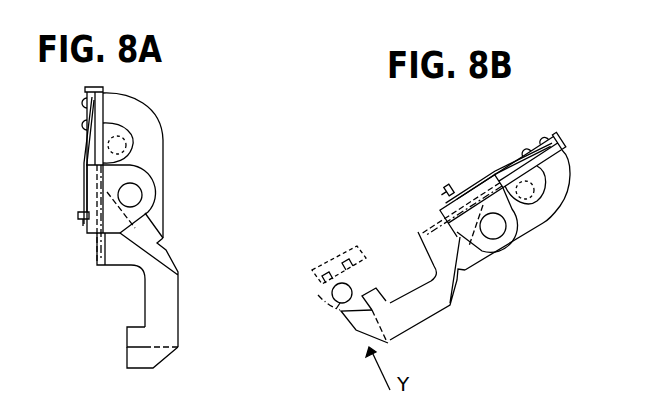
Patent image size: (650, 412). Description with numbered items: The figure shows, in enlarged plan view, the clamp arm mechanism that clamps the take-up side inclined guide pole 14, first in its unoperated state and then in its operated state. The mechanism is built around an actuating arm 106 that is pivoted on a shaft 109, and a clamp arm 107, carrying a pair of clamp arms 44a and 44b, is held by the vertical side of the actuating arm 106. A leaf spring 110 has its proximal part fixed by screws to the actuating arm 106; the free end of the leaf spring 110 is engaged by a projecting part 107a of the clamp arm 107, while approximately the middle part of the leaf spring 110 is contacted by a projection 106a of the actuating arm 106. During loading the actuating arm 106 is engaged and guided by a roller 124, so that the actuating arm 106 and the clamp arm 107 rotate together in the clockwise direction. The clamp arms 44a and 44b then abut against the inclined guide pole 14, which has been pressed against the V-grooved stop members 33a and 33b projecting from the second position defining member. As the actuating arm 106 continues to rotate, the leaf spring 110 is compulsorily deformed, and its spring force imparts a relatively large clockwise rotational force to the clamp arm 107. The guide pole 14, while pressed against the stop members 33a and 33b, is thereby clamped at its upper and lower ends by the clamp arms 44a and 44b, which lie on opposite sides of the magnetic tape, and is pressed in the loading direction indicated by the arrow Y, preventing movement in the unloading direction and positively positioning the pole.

In FIG. 8B, the inclined guide pole 14 is at (340, 310).
In FIG. 8B, the stop member 33a is at (331, 296).
In FIG. 8B, the stop member 33b is at (375, 252).
In FIG. 8A, the clamp arm 44a is at (127, 357).
In FIG. 8B, the clamp arm 44a is at (354, 329).
In FIG. 8A, the clamp arm 44b is at (127, 332).
In FIG. 8B, the clamp arm 44b is at (386, 290).
In FIG. 8A, the actuating arm 106 is at (163, 137).
In FIG. 8B, the actuating arm 106 is at (545, 222).
In FIG. 8A, the projection 106a is at (87, 167).
In FIG. 8B, the projection 106a is at (503, 170).
In FIG. 8A, the clamp arm 107 is at (163, 270).
In FIG. 8B, the clamp arm 107 is at (449, 308).
In FIG. 8A, the projecting part 107a is at (80, 211).
In FIG. 8B, the projecting part 107a is at (446, 185).
In FIG. 8A, the shaft 109 is at (131, 195).
In FIG. 8B, the shaft 109 is at (494, 228).
In FIG. 8A, the leaf spring 110 is at (87, 147).
In FIG. 8B, the leaf spring 110 is at (478, 175).
In FIG. 8A, the roller 124 is at (122, 137).
In FIG. 8B, the roller 124 is at (536, 195).